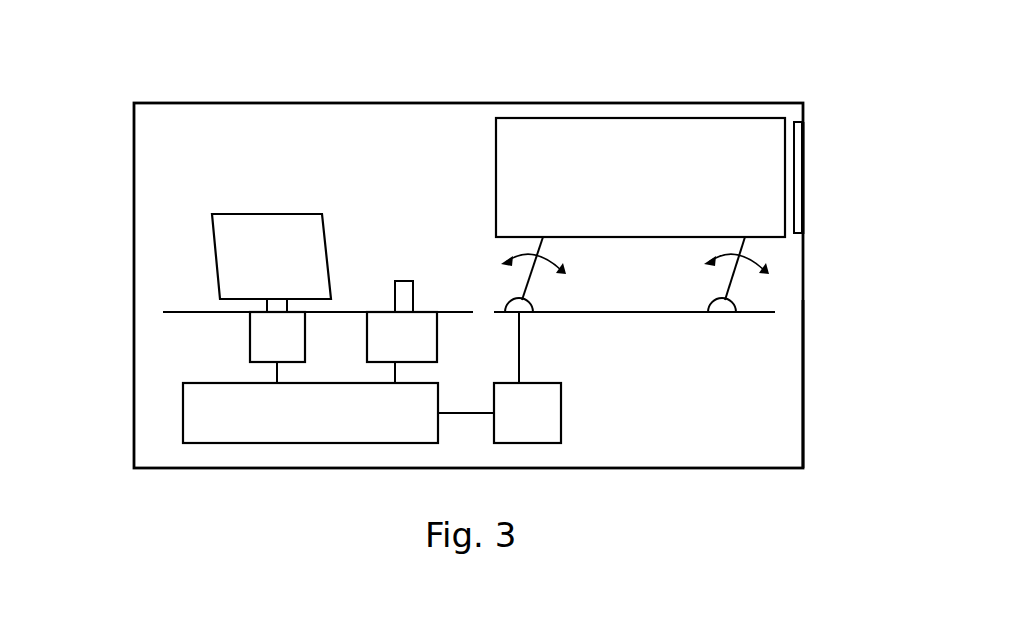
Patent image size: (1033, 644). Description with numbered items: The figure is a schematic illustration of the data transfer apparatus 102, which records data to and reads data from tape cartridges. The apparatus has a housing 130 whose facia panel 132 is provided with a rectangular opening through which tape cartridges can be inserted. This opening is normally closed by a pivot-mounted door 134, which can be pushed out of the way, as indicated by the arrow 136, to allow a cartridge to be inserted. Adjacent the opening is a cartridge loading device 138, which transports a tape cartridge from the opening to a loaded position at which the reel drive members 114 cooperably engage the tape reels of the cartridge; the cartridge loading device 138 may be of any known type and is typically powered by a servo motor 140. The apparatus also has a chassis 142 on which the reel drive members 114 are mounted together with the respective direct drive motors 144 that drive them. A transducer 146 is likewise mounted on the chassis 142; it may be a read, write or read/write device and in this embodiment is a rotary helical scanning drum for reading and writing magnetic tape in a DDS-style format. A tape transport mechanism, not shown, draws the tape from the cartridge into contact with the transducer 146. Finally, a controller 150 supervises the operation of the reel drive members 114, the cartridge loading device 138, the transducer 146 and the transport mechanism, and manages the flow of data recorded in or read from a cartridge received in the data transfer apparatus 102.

The data transfer apparatus 102 is at (469, 234).
The housing 130 is at (550, 103).
The facia panel 132 is at (803, 395).
The pivot-mounted door 134 is at (803, 217).
The arrow 136 is at (773, 180).
The cartridge loading device 138 is at (639, 215).
The servo motor 140 is at (499, 377).
The chassis 142 is at (190, 313).
The direct drive motors 144 is at (402, 347).
The reel drive members 114 is at (403, 280).
The transducer 146 is at (271, 298).
The controller 150 is at (310, 413).